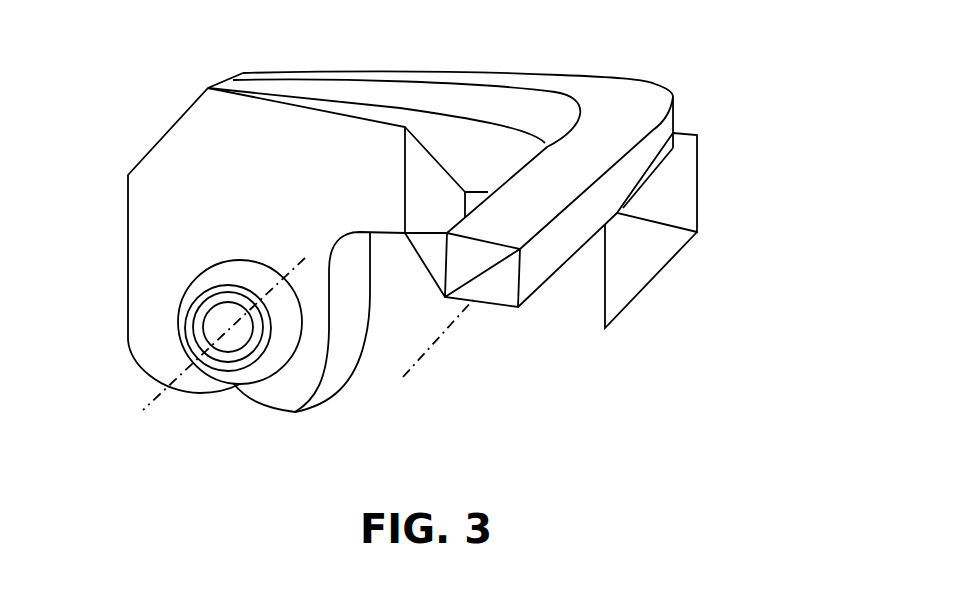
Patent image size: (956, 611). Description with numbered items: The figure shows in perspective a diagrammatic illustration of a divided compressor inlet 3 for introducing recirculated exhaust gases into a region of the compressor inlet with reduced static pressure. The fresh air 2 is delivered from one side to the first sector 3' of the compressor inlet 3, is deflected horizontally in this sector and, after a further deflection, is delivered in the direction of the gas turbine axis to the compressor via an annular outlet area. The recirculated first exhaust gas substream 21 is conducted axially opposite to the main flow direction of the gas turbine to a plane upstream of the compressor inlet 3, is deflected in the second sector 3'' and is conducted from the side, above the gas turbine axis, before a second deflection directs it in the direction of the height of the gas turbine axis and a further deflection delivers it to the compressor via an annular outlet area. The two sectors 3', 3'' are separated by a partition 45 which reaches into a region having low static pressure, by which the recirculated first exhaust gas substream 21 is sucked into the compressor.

The compressor inlet 3 is at (400, 242).
The first sector 3' is at (481, 284).
The second sector 3'' is at (397, 206).
The partition 45 is at (215, 292).
The recirculated first exhaust gas substream 21 is at (193, 317).
The fresh air 2 is at (476, 273).